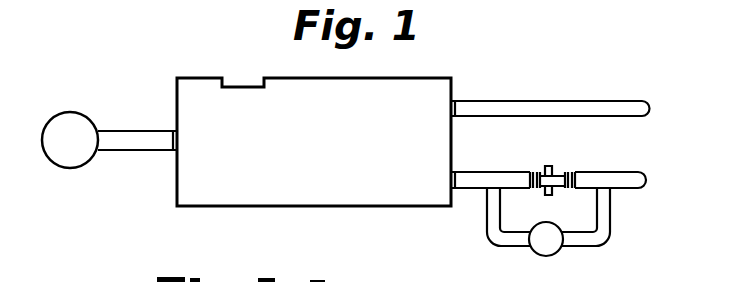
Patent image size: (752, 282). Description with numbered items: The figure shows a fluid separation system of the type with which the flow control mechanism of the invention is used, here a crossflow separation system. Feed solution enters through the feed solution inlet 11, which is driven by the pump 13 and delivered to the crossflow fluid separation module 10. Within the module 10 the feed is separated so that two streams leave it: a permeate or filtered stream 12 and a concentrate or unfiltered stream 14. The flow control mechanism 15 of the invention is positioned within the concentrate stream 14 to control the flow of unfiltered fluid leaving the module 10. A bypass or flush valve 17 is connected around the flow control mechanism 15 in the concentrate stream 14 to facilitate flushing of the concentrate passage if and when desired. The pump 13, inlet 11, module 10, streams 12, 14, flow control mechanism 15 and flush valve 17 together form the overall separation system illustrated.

The crossflow fluid separation module 10 is at (412, 102).
The feed solution inlet 11 is at (132, 140).
The permeate or filtered stream 12 is at (563, 108).
The pump 13 is at (62, 122).
The concentrate or unfiltered stream 14 is at (507, 182).
The flow control mechanism 15 is at (558, 180).
The bypass or flush valve 17 is at (562, 252).